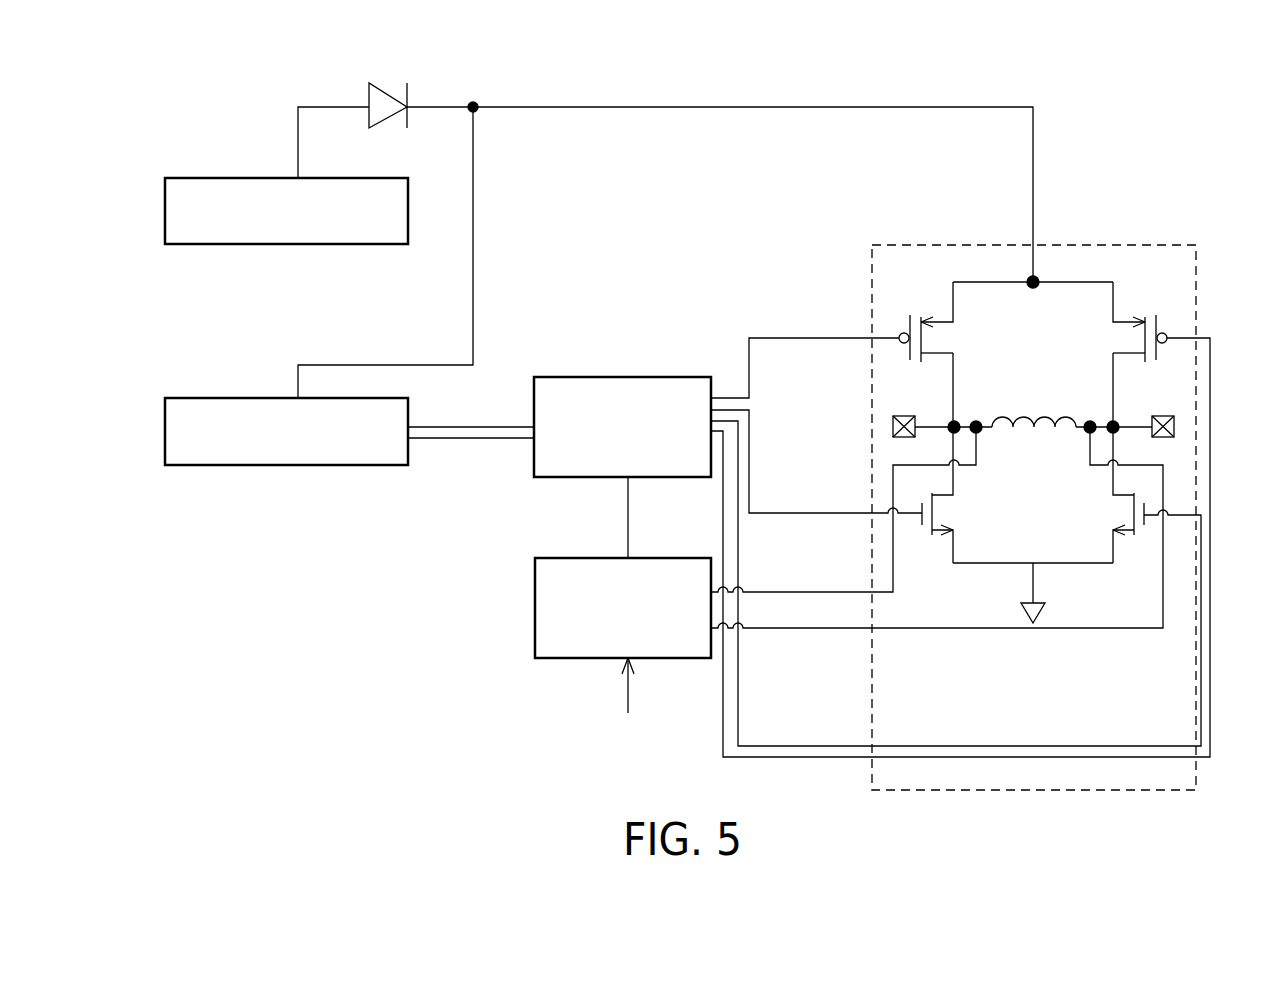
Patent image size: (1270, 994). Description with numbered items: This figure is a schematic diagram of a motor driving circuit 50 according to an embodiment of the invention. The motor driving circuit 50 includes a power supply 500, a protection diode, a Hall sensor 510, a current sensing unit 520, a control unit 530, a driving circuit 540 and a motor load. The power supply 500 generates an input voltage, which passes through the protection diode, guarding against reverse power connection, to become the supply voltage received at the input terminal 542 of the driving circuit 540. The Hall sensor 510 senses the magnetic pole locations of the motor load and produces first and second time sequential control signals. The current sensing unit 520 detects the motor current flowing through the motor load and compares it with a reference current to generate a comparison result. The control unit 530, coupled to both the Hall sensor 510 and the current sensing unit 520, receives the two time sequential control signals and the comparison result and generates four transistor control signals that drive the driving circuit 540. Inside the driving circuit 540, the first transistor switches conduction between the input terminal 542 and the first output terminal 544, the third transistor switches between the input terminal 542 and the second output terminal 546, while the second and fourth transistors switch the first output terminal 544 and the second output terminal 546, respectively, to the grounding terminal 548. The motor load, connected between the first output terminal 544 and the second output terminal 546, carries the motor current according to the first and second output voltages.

The motor driving circuit 50 is at (1155, 97).
The power supply 500 is at (300, 245).
The Hall sensor 510 is at (295, 466).
The current sensing unit 520 is at (564, 659).
The control unit 530 is at (568, 478).
The driving circuit 540 is at (1122, 245).
The input terminal 542 is at (1032, 285).
The first output terminal 544 is at (957, 422).
The second output terminal 546 is at (1111, 422).
The grounding terminal 548 is at (1035, 570).